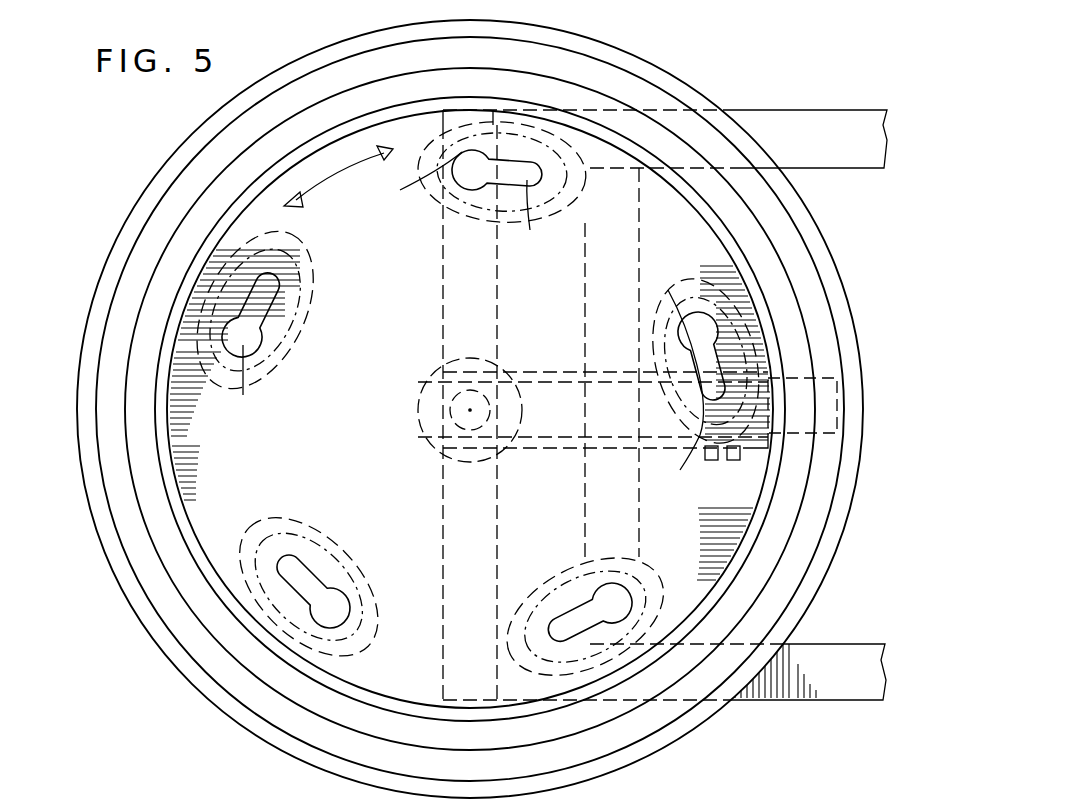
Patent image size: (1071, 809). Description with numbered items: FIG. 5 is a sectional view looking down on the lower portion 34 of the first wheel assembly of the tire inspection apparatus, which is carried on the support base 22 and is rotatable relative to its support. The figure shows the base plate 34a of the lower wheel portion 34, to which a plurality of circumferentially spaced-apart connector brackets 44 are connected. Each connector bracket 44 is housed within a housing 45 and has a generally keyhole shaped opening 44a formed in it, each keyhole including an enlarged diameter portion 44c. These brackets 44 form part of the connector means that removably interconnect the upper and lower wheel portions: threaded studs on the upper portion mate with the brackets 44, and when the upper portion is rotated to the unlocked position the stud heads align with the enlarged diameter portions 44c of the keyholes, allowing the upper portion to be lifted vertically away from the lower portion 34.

The support base 22 is at (762, 106).
The second or lower portion 34 is at (612, 40).
The base plate 34a is at (579, 405).
The connector bracket 44 is at (582, 207).
The keyhole shaped opening 44a is at (527, 215).
The enlarged diameter portion 44c is at (440, 178).
The housing 45 is at (470, 218).